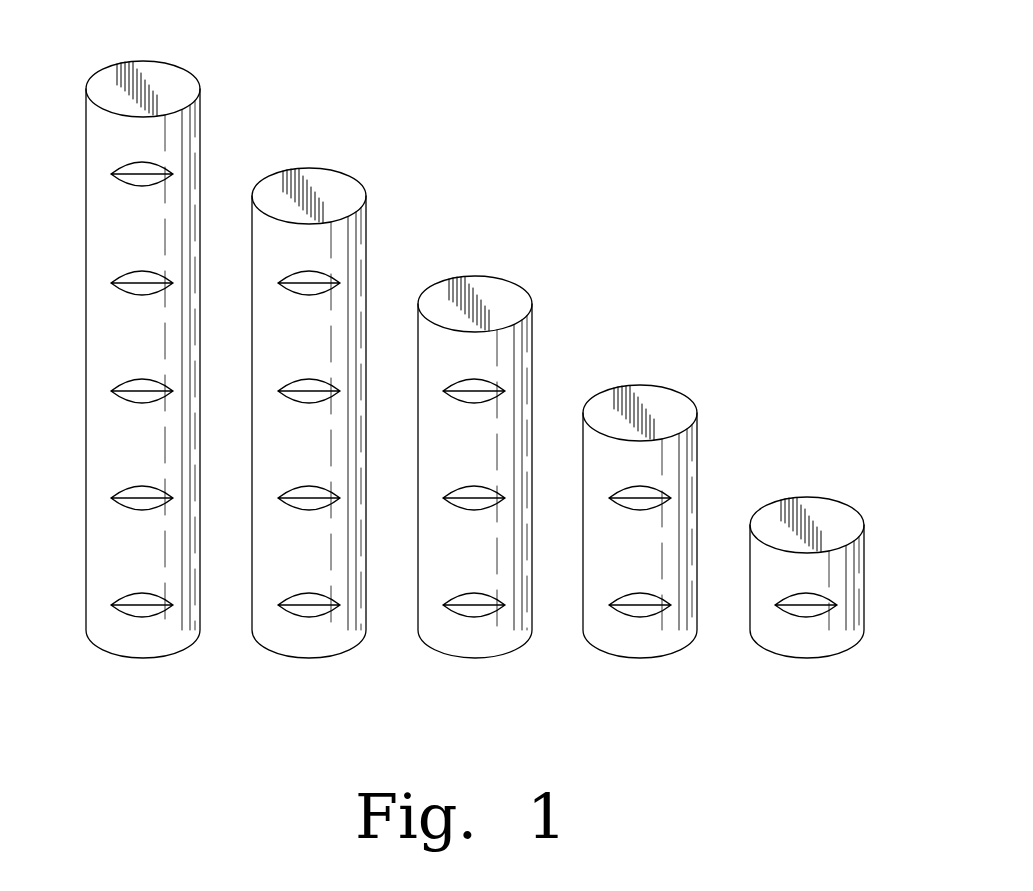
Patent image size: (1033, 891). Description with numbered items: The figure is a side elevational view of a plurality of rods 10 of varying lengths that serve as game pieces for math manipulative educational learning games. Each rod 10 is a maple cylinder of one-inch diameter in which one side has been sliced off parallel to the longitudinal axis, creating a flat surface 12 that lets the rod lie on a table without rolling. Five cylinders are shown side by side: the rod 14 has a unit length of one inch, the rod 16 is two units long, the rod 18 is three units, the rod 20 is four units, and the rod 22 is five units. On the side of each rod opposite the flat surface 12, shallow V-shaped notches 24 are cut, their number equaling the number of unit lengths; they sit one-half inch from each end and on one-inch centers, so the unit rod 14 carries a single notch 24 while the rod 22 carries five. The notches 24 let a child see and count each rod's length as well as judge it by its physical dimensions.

The rods 10 is at (664, 82).
The flat surface 12 is at (133, 61).
The unit length rod 14 is at (863, 620).
The rod of two units length 16 is at (697, 620).
The rod of three units length 18 is at (532, 618).
The rod of four units length 20 is at (366, 618).
The rod of five units length 22 is at (200, 618).
The notches 24 is at (111, 173).